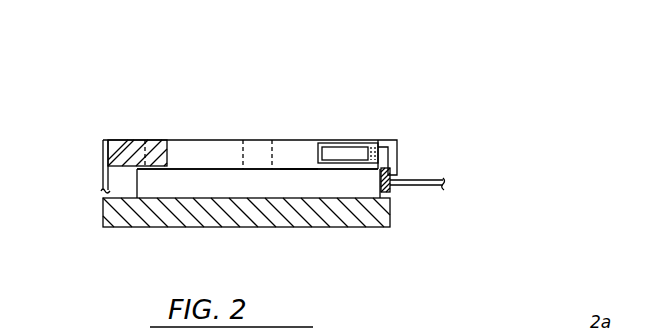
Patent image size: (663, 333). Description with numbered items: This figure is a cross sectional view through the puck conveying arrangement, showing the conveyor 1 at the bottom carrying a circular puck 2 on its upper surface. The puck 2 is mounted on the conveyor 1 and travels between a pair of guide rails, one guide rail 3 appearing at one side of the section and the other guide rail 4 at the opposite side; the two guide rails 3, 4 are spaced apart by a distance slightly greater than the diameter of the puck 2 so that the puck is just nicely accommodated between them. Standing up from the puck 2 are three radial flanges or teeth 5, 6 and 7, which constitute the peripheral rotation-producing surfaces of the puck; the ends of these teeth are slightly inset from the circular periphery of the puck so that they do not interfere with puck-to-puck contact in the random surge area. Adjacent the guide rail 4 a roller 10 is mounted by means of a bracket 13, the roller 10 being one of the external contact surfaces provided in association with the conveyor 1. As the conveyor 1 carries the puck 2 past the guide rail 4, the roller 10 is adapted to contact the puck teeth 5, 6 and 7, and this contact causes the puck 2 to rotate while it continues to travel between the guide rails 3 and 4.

The conveyor 1 is at (237, 228).
The circular puck 2 is at (278, 180).
The guide rail 3 is at (103, 155).
The guide rail 4 is at (390, 172).
The radial flange or tooth 5 is at (186, 142).
The radial flange or tooth 6 is at (308, 146).
The radial flange or tooth 7 is at (257, 153).
The roller 10 is at (358, 152).
The bracket 13 is at (398, 143).